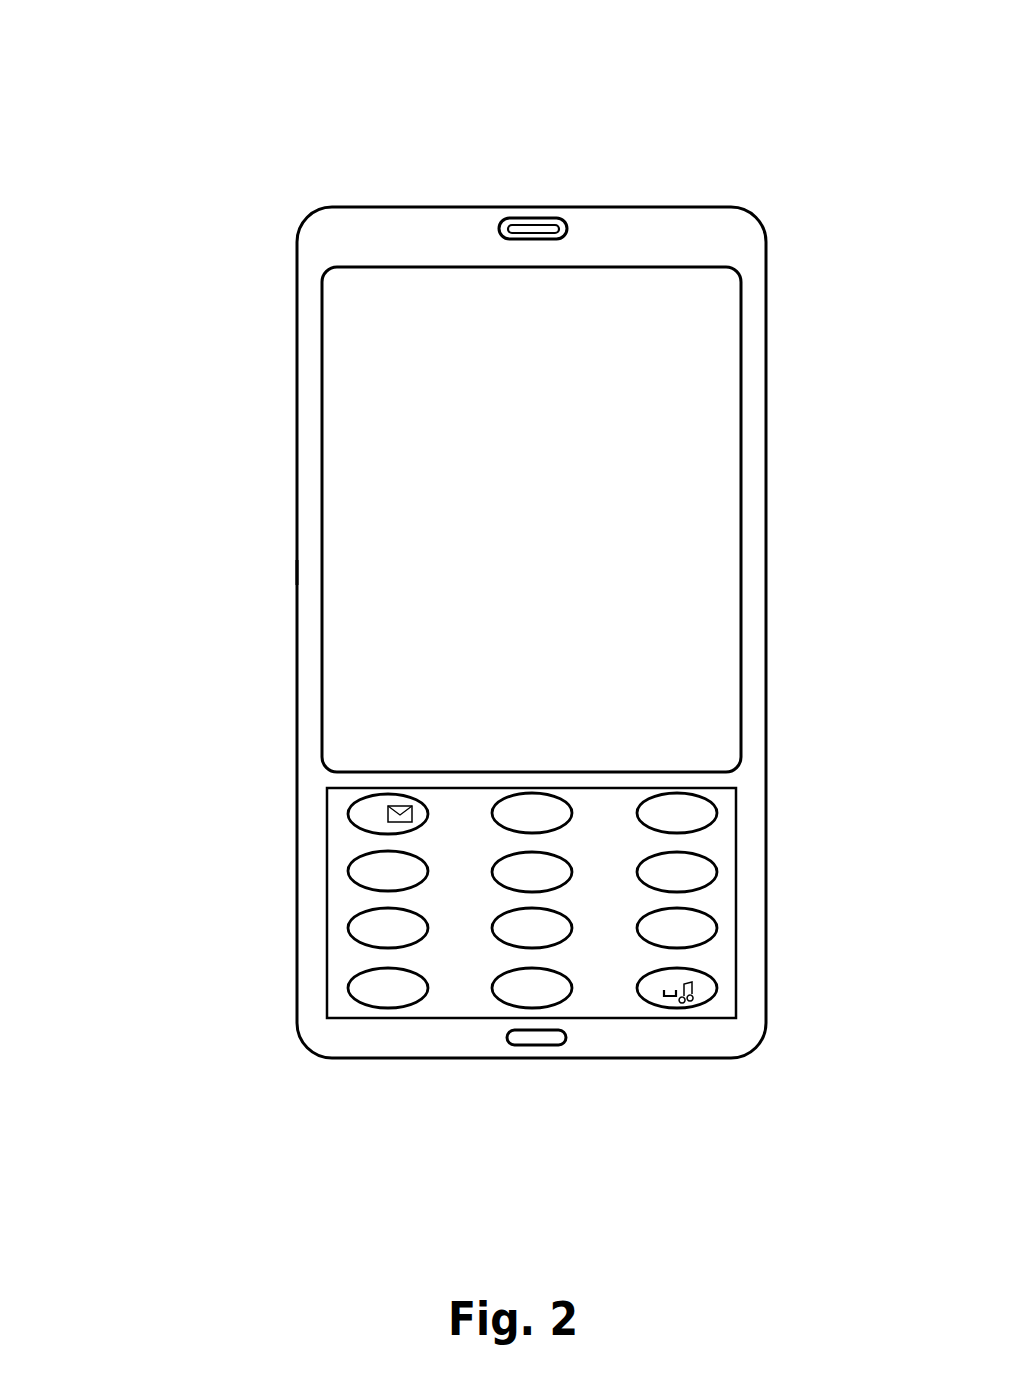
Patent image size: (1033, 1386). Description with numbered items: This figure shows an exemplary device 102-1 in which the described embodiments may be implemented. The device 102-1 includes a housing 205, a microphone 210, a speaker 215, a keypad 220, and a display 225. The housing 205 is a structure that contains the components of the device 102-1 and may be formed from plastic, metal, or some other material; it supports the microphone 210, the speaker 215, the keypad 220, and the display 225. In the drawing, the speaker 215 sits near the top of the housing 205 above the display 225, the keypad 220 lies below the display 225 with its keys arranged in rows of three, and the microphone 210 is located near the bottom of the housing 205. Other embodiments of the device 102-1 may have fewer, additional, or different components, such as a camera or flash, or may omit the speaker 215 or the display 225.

The device 102-1 is at (224, 79).
The housing 205 is at (297, 572).
The microphone 210 is at (554, 1046).
The speaker 215 is at (542, 216).
The keypad 220 is at (780, 1005).
The display 225 is at (723, 502).